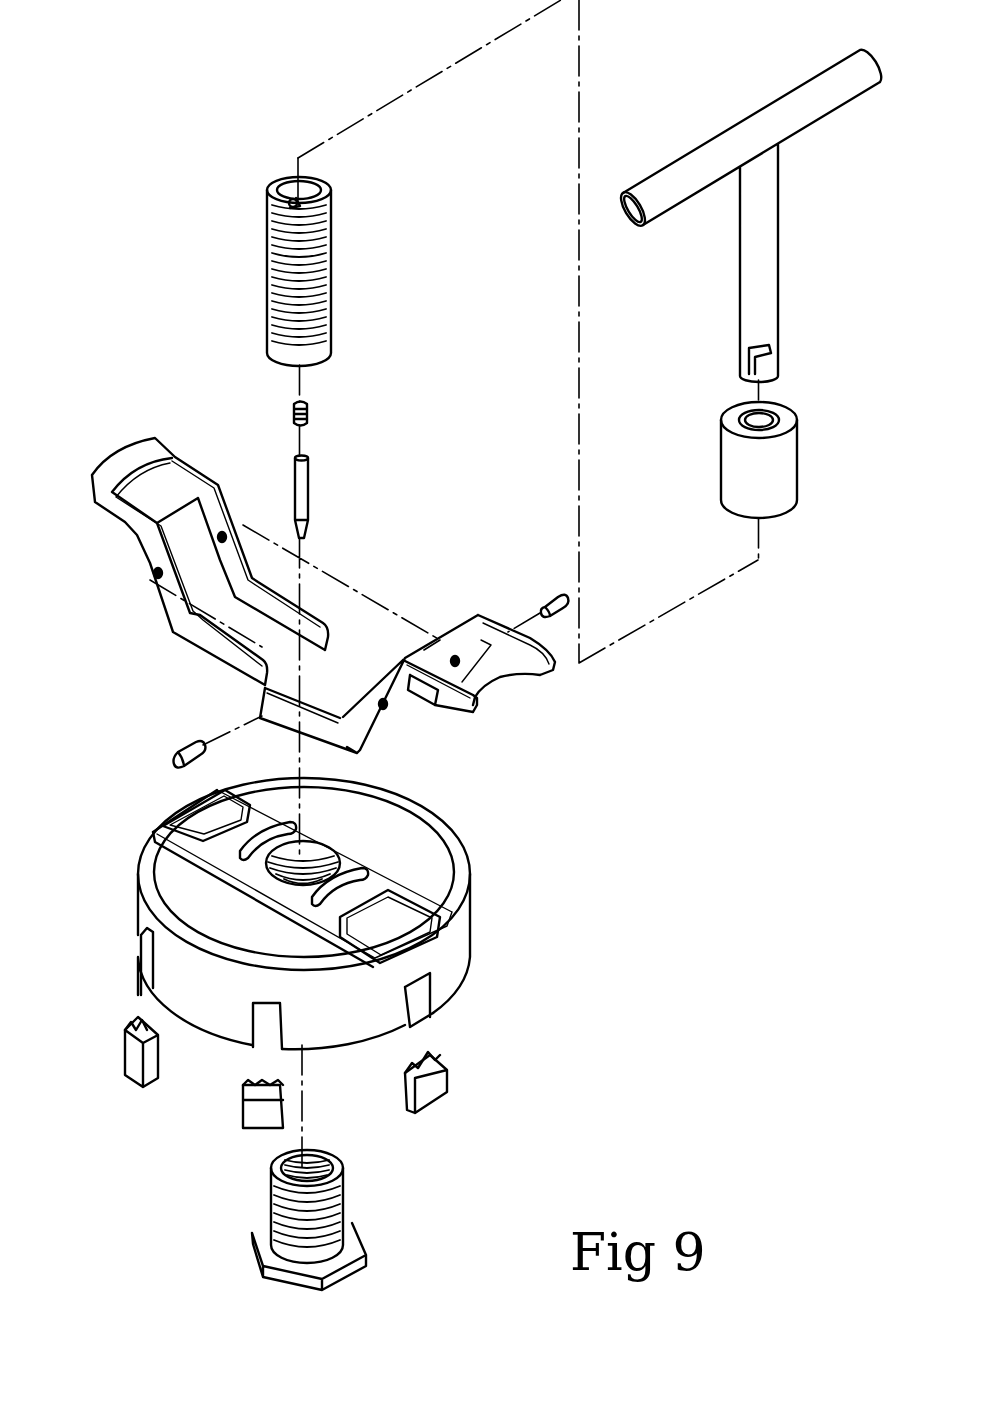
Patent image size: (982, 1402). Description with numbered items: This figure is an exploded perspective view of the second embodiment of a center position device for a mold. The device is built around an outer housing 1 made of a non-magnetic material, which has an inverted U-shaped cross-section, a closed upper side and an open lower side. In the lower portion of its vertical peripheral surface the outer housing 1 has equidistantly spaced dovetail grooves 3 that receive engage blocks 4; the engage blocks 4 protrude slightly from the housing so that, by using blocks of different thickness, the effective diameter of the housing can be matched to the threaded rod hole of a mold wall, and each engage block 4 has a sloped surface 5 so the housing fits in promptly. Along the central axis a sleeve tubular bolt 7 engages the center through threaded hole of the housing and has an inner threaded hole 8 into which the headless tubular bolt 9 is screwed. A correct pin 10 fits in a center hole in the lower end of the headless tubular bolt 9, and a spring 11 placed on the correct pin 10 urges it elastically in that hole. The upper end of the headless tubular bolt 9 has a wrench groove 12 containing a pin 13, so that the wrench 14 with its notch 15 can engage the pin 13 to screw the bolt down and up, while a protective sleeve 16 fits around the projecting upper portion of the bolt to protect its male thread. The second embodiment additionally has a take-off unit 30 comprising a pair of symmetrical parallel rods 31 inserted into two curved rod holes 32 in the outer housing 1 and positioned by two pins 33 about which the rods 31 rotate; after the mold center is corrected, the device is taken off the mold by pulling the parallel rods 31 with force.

The outer housing 1 is at (482, 922).
The dovetail grooves 3 is at (147, 977).
The engage blocks 4 is at (132, 1075).
The sloped surface 5 is at (125, 1035).
The sleeve tubular bolt 7 is at (358, 1240).
The inner threaded hole 8 is at (318, 1166).
The headless tubular bolt 9 is at (318, 282).
The correct pin 10 is at (309, 502).
The spring 11 is at (308, 410).
The wrench groove 12 is at (293, 200).
The pin 13 is at (295, 206).
The wrench 14 is at (773, 244).
The notch 15 is at (740, 373).
The protective sleeve 16 is at (786, 470).
The take-off unit 30 is at (323, 595).
The parallel rods 31 is at (152, 553).
The curved rod holes 32 is at (263, 840).
The pins 33 is at (551, 597).